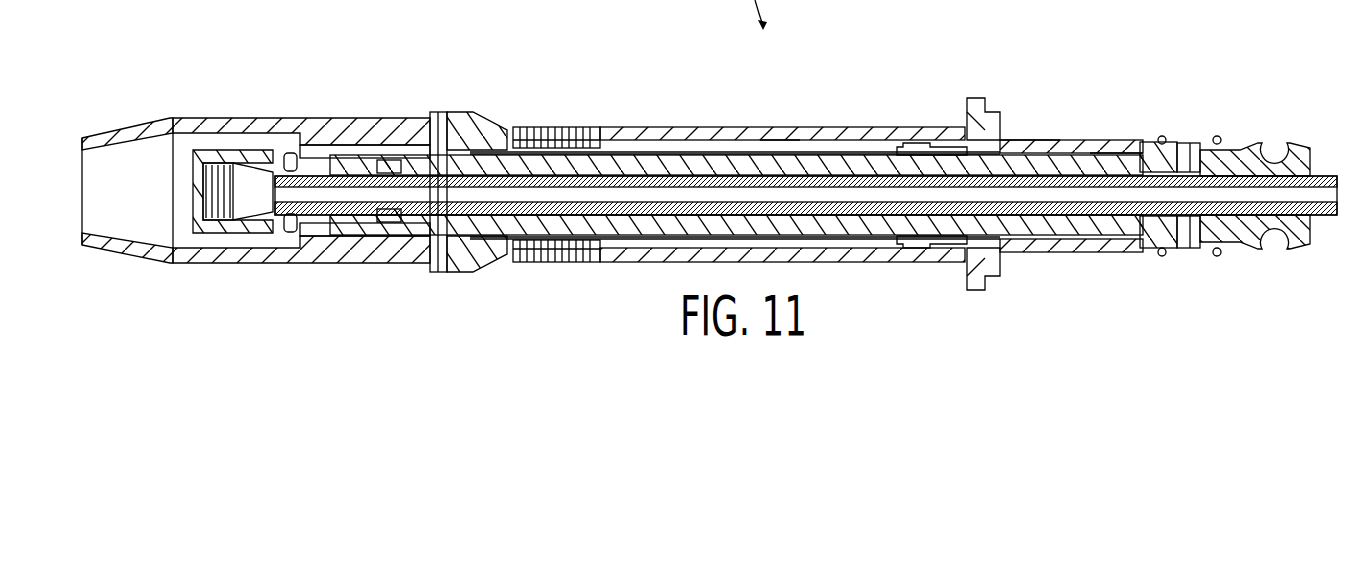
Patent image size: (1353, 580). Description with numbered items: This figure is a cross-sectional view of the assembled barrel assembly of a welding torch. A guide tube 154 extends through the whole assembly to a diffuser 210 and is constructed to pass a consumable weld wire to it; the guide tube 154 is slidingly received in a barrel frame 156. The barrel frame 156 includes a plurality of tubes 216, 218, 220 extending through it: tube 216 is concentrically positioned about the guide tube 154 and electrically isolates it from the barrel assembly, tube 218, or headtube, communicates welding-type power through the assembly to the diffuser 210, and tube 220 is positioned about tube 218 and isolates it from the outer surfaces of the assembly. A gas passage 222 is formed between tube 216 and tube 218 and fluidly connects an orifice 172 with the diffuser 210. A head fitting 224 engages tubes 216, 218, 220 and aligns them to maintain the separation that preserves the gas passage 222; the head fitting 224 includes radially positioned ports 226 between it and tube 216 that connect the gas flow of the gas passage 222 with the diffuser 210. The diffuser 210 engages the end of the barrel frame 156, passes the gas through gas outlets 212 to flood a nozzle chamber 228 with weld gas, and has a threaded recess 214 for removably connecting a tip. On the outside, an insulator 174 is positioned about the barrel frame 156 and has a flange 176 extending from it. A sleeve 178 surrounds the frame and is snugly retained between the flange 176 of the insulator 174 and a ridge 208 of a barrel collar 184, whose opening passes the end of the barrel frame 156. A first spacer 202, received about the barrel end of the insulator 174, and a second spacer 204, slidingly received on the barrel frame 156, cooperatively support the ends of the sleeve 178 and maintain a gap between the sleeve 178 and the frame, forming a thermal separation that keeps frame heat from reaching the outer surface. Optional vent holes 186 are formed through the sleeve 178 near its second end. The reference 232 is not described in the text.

The guide tube 154 is at (1337, 187).
The barrel frame 156 is at (1265, 250).
The orifice 172 is at (1190, 138).
The insulator 174 is at (1009, 138).
The flange 176 is at (968, 115).
The sleeve 178 is at (700, 134).
The barrel collar 184 is at (463, 123).
The vent holes 186 is at (563, 272).
The first spacer 202 is at (915, 140).
The second spacer 204 is at (553, 140).
The ridge 208 is at (483, 140).
The diffuser 210 is at (230, 228).
The gas outlets 212 is at (290, 152).
The threaded recess 214 is at (190, 175).
The tube 216 is at (1145, 138).
The headtube 218 is at (1110, 138).
The tube 220 is at (1033, 140).
The gas passage 222 is at (677, 163).
The head fitting 224 is at (387, 163).
The ports 226 is at (387, 215).
The nozzle chamber 228 is at (100, 177).
The outer tube wall 232 is at (770, 140).